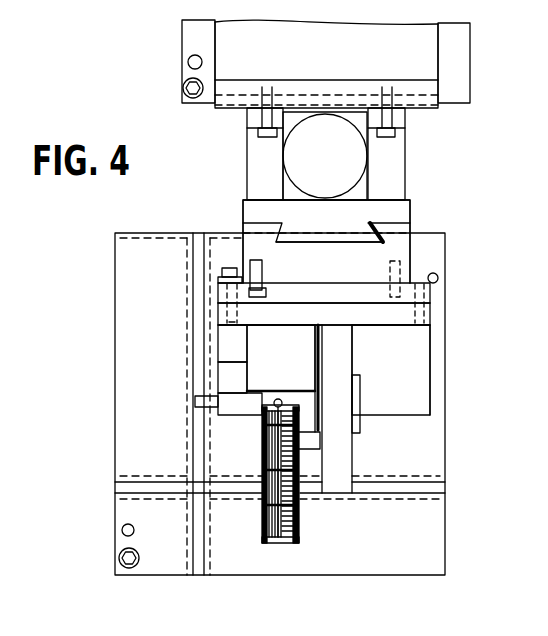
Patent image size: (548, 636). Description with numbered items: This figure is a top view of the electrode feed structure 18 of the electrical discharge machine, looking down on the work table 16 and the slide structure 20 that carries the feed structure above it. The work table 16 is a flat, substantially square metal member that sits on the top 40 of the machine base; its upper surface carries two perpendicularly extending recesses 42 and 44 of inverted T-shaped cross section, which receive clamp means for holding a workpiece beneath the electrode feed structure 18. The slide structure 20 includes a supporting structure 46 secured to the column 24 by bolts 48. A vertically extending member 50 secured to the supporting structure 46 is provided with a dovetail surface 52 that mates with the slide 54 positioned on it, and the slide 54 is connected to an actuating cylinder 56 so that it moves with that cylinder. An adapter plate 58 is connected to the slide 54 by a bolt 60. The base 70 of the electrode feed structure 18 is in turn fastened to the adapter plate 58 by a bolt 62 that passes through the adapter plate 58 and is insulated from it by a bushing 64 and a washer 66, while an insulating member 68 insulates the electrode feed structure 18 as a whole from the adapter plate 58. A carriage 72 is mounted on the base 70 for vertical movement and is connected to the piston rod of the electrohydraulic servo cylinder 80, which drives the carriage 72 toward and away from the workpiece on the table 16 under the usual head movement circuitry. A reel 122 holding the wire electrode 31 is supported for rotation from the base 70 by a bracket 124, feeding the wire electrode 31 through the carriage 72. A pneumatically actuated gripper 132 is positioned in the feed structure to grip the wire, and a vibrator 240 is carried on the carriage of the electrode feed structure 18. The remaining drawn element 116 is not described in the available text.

The work table 16 is at (445, 452).
The electrode feed structure 18 is at (431, 355).
The slide structure 20 is at (410, 228).
The column 24 is at (471, 66).
The wire electrode 31 is at (283, 540).
The top of the base 40 is at (410, 529).
The recess 42 is at (117, 484).
The recess 44 is at (197, 576).
The supporting structure 46 is at (406, 150).
The bolts 48 is at (258, 135).
The vertically extending member 50 is at (410, 210).
The dovetail surface 52 is at (292, 243).
The slide 54 is at (410, 262).
The actuating cylinder 56 is at (291, 179).
The adapter plate 58 is at (431, 292).
The bolt 60 is at (252, 262).
The bolt 62 is at (222, 268).
The bushing 64 is at (220, 298).
The washer 66 is at (218, 282).
The insulating member 68 is at (431, 307).
The base 70 is at (328, 302).
The carriage 72 is at (218, 377).
The electrohydraulic servo cylinder 80 is at (261, 395).
The side wall 116 is at (431, 392).
The reel 122 is at (296, 515).
The bracket 124 is at (357, 454).
The gripper 132 is at (197, 402).
The vibrator 240 is at (360, 398).